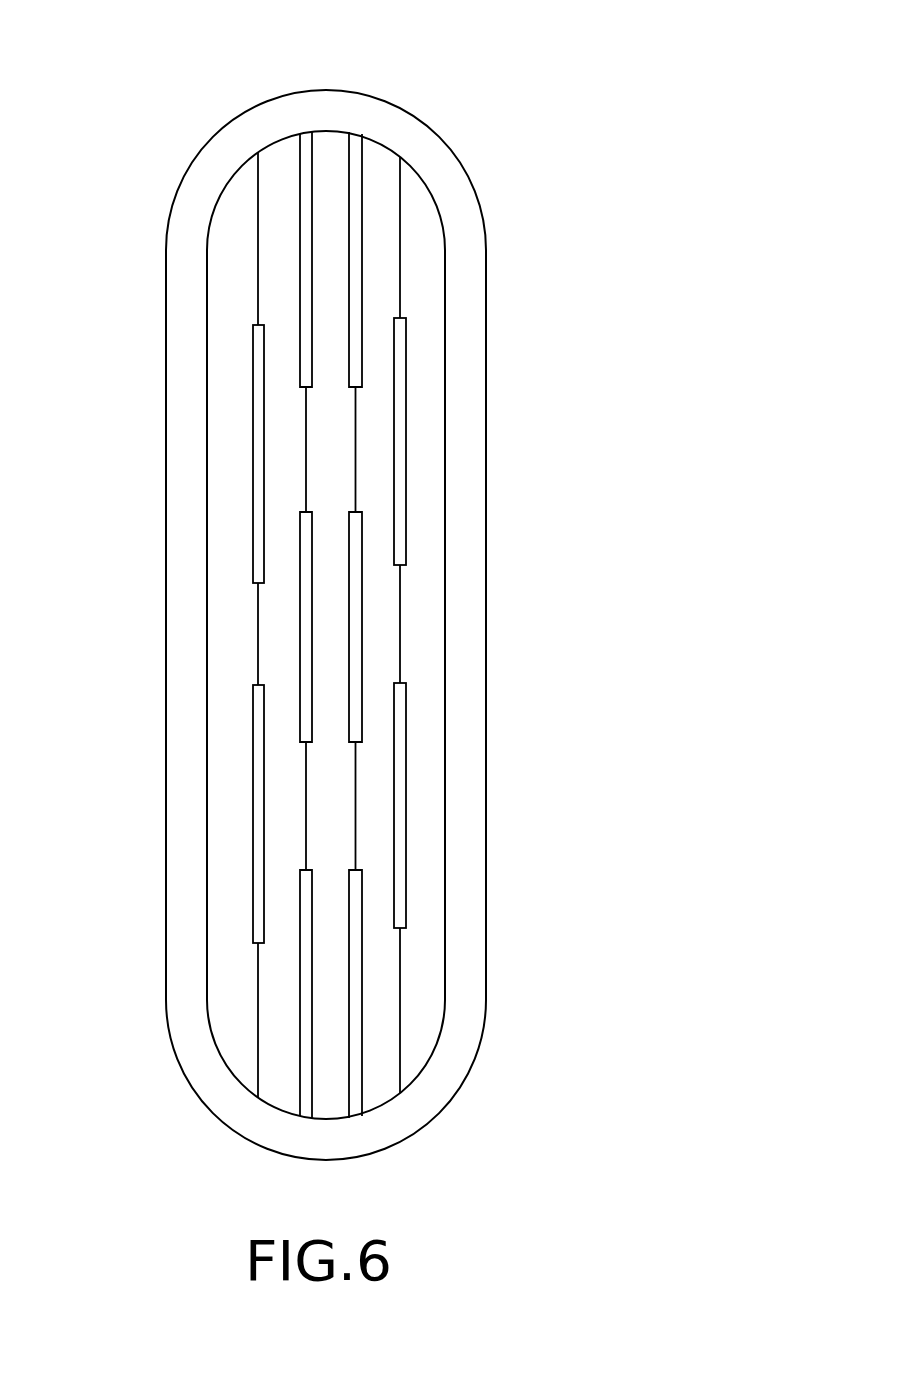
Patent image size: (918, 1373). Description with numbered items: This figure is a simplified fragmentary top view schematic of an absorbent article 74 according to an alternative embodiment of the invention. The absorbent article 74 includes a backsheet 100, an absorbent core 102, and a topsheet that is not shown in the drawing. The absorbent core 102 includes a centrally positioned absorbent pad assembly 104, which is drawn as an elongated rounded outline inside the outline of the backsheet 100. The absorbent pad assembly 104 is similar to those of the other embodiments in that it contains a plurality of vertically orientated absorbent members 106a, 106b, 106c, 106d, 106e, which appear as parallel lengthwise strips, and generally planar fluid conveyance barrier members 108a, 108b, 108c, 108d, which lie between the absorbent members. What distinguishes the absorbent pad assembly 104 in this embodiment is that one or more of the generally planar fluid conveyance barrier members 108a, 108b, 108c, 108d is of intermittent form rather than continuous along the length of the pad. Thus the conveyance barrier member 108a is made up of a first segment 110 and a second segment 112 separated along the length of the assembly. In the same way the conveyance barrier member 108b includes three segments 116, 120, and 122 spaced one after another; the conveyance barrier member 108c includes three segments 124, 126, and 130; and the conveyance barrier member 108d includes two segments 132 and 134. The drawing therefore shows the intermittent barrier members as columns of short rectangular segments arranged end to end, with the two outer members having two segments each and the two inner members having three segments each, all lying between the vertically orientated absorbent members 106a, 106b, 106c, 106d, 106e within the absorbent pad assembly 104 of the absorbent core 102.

The absorbent article 74 is at (474, 80).
The backsheet 100 is at (212, 162).
The absorbent core 102 is at (240, 1108).
The absorbent pad assembly 104 is at (458, 265).
The vertically orientated absorbent member 106a is at (233, 953).
The vertically orientated absorbent member 106b is at (283, 642).
The vertically orientated absorbent member 106c is at (336, 170).
The vertically orientated absorbent member 106d is at (378, 638).
The vertically orientated absorbent member 106e is at (425, 953).
The fluid conveyance barrier member 108a is at (253, 805).
The fluid conveyance barrier member 108b is at (303, 266).
The fluid conveyance barrier member 108c is at (357, 282).
The fluid conveyance barrier member 108d is at (403, 772).
The first segment 110 is at (260, 852).
The second segment 112 is at (253, 447).
The segment 116 is at (303, 993).
The segment 120 is at (303, 683).
The segment 122 is at (303, 188).
The segment 124 is at (362, 1012).
The segment 126 is at (358, 663).
The segment 130 is at (362, 188).
The segment 132 is at (403, 842).
The segment 134 is at (407, 448).